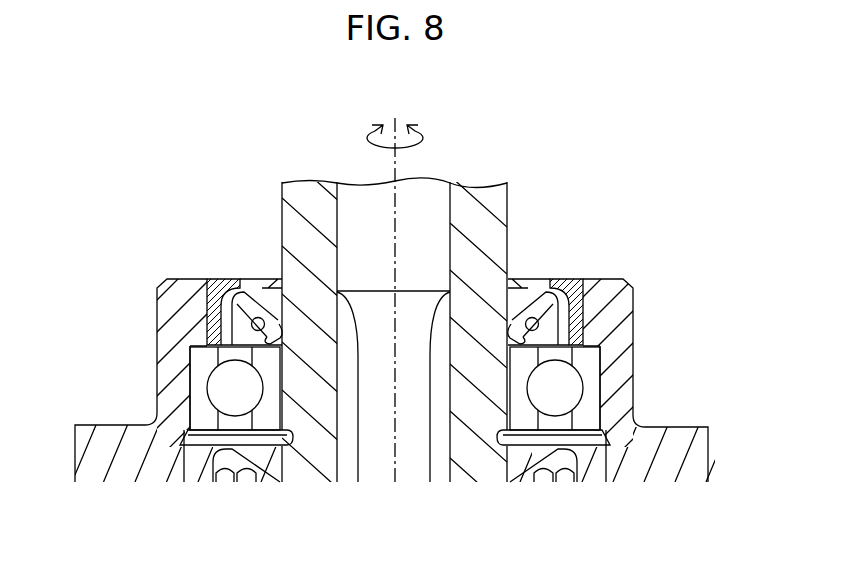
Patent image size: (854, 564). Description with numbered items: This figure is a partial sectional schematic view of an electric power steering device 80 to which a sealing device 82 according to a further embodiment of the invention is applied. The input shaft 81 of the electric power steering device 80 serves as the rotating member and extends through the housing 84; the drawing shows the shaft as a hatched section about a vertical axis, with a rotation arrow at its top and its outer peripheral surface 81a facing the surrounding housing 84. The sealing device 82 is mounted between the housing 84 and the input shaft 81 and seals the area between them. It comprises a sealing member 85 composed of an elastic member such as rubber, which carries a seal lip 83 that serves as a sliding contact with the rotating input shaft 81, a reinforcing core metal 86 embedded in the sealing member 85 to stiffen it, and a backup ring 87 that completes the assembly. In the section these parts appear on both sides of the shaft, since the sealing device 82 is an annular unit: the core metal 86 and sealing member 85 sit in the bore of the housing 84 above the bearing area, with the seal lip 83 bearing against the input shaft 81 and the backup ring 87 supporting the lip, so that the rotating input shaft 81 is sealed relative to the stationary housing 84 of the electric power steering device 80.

The electric power steering device 80 is at (630, 164).
The input shaft 81 is at (512, 199).
The outer peripheral surface of shaft 81a is at (282, 212).
The sealing device 82 is at (563, 269).
The seal lip 83 is at (512, 318).
The housing 84 is at (678, 440).
The sealing member 85 is at (207, 302).
The reinforcing core metal 86 is at (222, 327).
The backup ring 87 is at (256, 318).